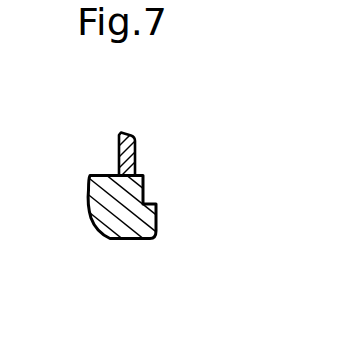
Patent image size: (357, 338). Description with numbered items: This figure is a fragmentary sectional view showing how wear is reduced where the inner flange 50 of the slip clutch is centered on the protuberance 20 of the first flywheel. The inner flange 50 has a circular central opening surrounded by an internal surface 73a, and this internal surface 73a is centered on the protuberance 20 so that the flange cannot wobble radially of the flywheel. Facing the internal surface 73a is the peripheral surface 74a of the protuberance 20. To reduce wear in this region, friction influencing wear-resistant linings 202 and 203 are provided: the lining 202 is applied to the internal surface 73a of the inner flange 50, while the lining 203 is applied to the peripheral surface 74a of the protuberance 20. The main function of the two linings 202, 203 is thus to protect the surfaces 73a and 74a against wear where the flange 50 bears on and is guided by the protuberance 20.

The protuberance 20 is at (158, 222).
The inner flange 50 is at (123, 133).
The wear-resistant lining 202 is at (118, 174).
The wear-resistant lining 203 is at (124, 177).
The internal surface 73a is at (137, 170).
The peripheral surface 74a is at (128, 177).